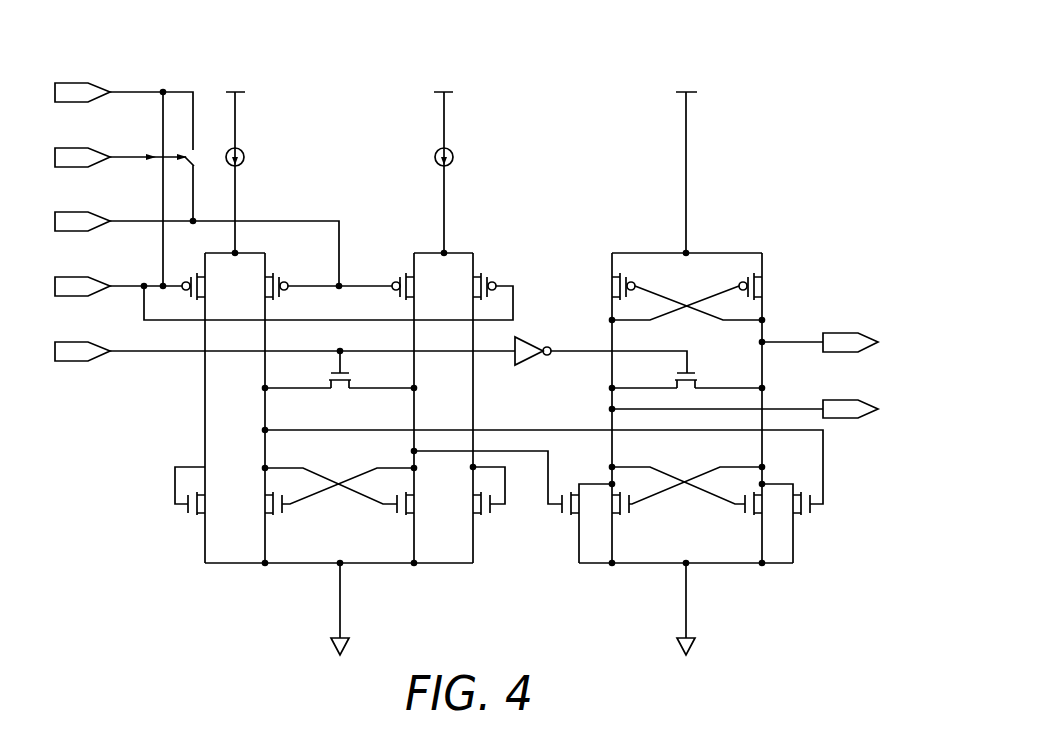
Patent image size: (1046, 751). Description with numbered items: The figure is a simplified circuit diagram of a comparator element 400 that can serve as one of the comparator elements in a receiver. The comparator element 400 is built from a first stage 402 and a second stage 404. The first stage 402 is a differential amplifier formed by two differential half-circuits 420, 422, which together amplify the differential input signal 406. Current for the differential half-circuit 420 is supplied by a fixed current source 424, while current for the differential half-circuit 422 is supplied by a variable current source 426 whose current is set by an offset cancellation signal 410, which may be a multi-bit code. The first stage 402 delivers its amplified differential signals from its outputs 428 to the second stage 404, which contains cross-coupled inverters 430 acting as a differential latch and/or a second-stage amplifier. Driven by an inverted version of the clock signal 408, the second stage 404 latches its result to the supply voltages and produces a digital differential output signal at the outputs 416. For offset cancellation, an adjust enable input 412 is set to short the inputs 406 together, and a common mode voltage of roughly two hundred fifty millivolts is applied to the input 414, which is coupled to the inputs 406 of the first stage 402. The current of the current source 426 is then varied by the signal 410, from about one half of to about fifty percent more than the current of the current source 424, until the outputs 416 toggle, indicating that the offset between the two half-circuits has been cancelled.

The comparator element 400 is at (762, 78).
The first stage 402 is at (273, 591).
The second stage 404 is at (619, 591).
The differential input signal 406 is at (72, 231).
The clock signal 408 is at (72, 361).
The offset cancellation signal 410 is at (440, 125).
The adjust enable input 412 is at (72, 167).
The common mode voltage input 414 is at (72, 102).
The outputs 416 is at (839, 352).
The differential half-circuit 420 is at (247, 252).
The differential half-circuit 422 is at (455, 252).
The current source 424 is at (245, 157).
The current source 426 is at (454, 157).
The outputs 428 is at (545, 430).
The cross-coupled inverters 430 is at (713, 252).